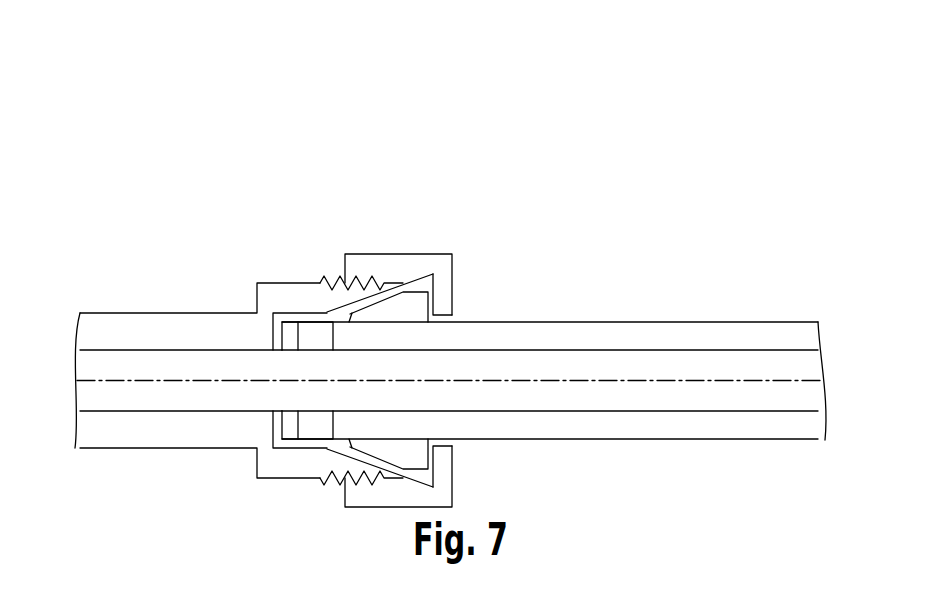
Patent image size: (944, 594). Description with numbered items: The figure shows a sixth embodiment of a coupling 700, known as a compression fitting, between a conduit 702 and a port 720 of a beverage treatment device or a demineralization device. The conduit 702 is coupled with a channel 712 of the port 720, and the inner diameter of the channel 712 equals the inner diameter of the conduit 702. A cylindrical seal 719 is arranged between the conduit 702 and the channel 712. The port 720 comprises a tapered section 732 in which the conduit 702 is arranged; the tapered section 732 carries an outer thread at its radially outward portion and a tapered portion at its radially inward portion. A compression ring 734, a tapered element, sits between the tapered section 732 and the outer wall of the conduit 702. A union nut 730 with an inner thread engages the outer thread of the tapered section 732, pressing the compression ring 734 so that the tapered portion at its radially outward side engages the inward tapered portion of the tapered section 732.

The coupling 700 is at (645, 72).
The conduit 702 is at (755, 340).
The channel 712 is at (170, 360).
The cylindrical seal 719 is at (290, 322).
The port 720 is at (197, 130).
The union nut 730 is at (398, 267).
The tapered section 732 is at (307, 300).
The compression ring 734 is at (413, 306).